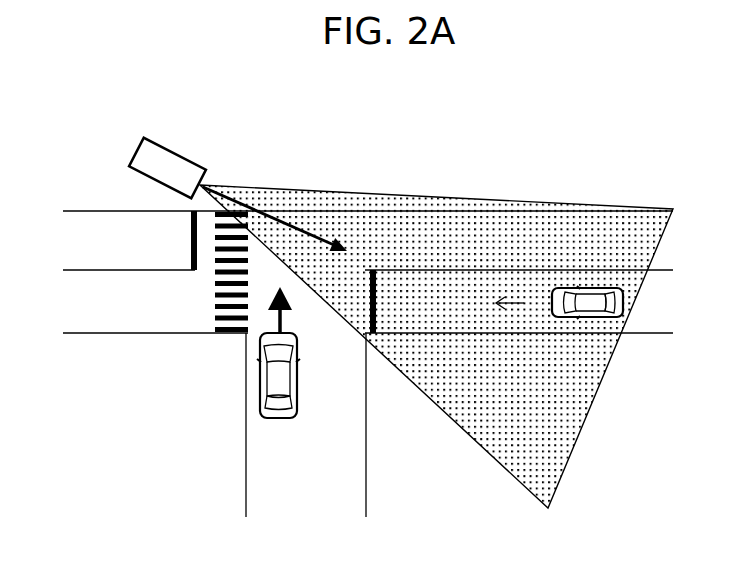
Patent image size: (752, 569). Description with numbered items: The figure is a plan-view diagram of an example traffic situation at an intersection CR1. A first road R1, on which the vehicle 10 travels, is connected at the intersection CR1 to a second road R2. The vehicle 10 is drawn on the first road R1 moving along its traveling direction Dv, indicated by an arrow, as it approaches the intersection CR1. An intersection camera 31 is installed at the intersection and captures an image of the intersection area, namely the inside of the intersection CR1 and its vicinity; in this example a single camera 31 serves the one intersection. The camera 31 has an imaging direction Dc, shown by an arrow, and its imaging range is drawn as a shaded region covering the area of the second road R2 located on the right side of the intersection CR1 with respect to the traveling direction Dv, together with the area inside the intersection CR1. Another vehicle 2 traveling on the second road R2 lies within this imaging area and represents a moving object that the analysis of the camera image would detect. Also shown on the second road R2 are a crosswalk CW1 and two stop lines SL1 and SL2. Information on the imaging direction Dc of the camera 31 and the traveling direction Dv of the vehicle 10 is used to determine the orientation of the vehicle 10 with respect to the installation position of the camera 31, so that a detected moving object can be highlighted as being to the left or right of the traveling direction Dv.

The intersection camera 31 is at (140, 143).
The imaging direction Dc is at (231, 199).
The second road R2 is at (142, 245).
The first road R1 is at (345, 497).
The stop line SL2 is at (192, 254).
The stop line SL1 is at (378, 312).
The crosswalk CW1 is at (218, 313).
The traveling direction Dv is at (278, 318).
The vehicle 10 is at (262, 391).
The intersection CR1 is at (309, 302).
The another vehicle 2 is at (623, 302).